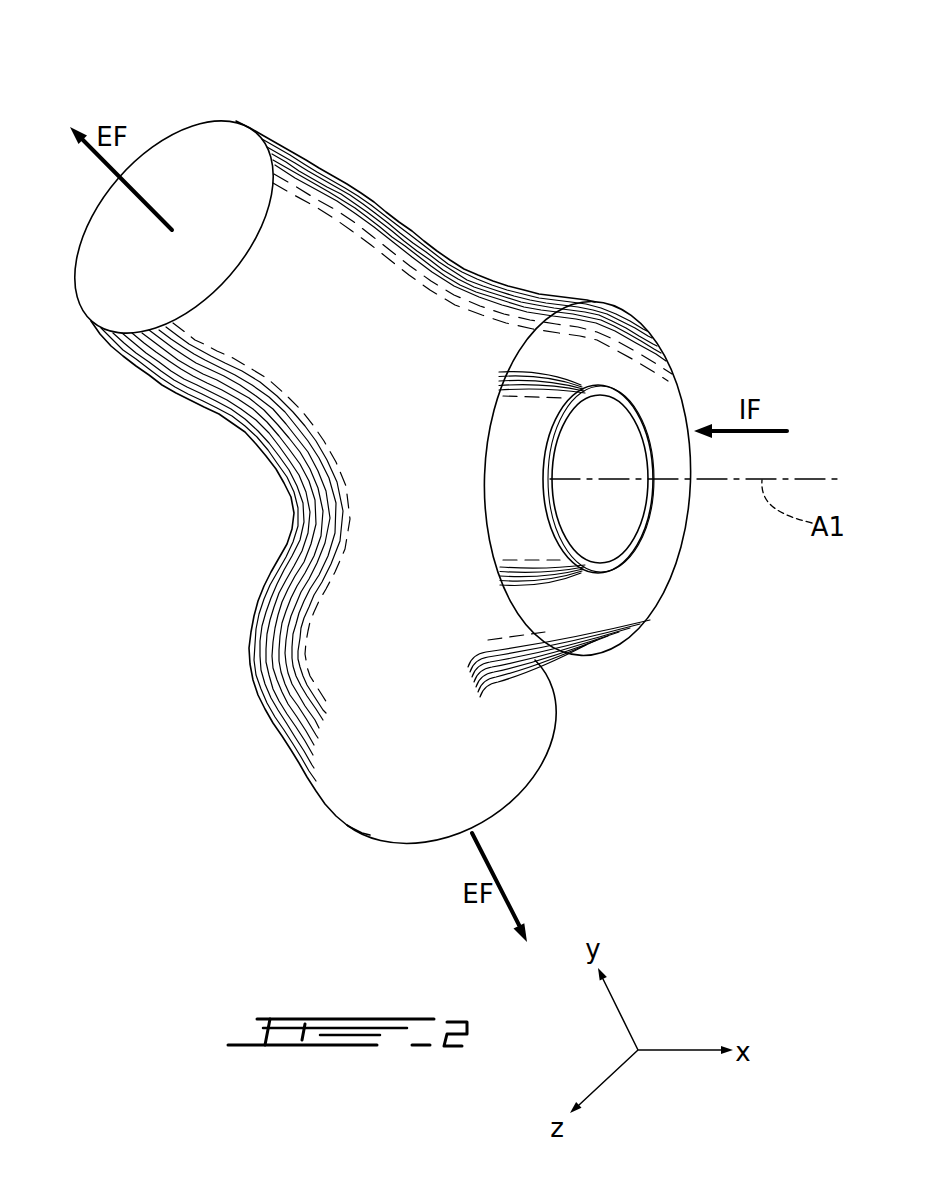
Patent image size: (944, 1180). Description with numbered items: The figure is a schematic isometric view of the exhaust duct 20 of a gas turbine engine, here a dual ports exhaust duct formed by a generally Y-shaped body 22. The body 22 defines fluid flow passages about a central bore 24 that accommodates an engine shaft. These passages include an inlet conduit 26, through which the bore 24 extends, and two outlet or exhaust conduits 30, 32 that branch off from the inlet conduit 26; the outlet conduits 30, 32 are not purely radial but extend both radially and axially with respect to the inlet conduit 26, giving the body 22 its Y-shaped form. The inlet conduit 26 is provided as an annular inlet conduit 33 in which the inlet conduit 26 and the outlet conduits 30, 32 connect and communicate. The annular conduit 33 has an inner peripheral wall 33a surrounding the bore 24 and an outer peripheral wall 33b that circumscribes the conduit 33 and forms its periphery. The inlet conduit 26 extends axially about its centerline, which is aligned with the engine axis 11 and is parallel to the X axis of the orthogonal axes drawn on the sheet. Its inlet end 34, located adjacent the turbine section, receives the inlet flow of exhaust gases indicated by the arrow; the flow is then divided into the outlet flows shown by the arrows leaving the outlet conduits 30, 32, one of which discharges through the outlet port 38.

The exhaust duct 20 is at (437, 447).
The outlet port 38 is at (176, 170).
The outlet conduit 30 is at (300, 210).
The Y-shaped body 22 is at (417, 262).
The inlet conduit 26 is at (520, 285).
The inlet end 34 is at (676, 362).
The annular inlet conduit 33 is at (537, 598).
The inner peripheral wall 33a is at (642, 528).
The outer peripheral wall 33b is at (548, 662).
The central bore 24 is at (580, 512).
The outlet conduit 32 is at (483, 777).
The engine axis 11 is at (806, 478).